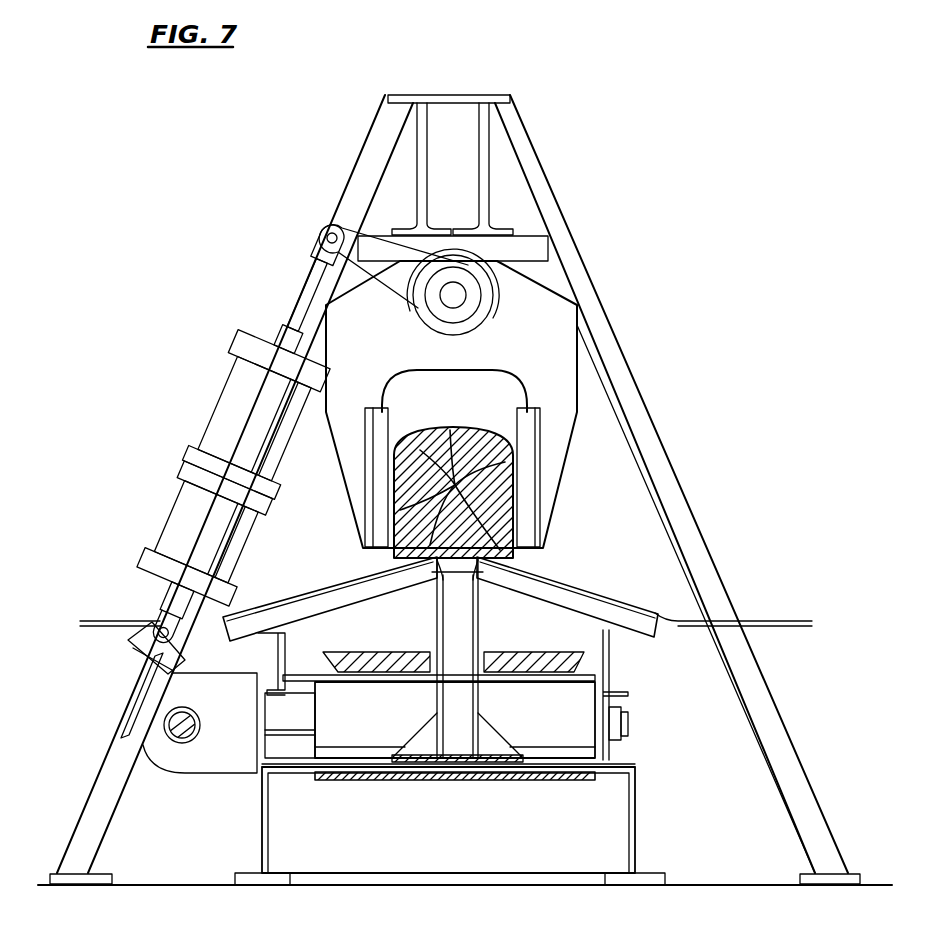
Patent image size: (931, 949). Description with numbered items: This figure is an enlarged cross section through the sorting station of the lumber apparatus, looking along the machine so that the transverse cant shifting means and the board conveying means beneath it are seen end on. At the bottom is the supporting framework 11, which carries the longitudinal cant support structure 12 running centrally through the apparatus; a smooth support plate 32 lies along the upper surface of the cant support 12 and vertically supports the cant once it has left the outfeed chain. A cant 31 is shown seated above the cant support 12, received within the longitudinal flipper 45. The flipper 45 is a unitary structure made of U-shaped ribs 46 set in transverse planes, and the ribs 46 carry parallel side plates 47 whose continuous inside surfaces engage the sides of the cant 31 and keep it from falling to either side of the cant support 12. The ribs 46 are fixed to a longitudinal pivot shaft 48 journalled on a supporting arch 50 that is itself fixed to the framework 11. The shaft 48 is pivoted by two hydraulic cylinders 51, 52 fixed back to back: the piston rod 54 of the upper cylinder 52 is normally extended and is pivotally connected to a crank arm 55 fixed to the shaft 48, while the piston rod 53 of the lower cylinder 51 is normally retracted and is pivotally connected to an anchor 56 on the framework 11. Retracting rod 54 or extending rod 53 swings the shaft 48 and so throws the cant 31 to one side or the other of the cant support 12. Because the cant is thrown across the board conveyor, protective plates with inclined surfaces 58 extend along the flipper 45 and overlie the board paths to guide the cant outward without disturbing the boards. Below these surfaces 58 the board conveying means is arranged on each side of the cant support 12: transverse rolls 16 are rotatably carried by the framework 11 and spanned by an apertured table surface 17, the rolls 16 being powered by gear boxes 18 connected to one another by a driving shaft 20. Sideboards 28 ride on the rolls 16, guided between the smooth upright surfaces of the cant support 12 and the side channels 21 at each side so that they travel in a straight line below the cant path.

The supporting framework 11 is at (636, 800).
The longitudinal cant support structure 12 is at (472, 600).
The transverse rolls 16 is at (378, 727).
The table surface 17 is at (300, 672).
The gear boxes 18 is at (238, 760).
The driving shaft 20 is at (186, 718).
The side channels 21 is at (276, 663).
The sideboards 28 is at (412, 652).
The cant 31 is at (448, 435).
The support plate 32 is at (438, 600).
The flipper 45 is at (590, 352).
The U-shaped ribs 46 is at (545, 343).
The side plates 47 is at (383, 515).
The pivot shaft 48 is at (447, 302).
The supporting arch 50 is at (545, 158).
The lower hydraulic cylinder 51 is at (185, 512).
The upper hydraulic cylinder 52 is at (228, 398).
The piston rod of lower cylinder 53 is at (172, 614).
The piston rod of upper cylinder 54 is at (312, 285).
The crank arm 55 is at (340, 228).
The anchor 56 is at (135, 642).
The inclined surfaces of protective plates 58 is at (350, 581).